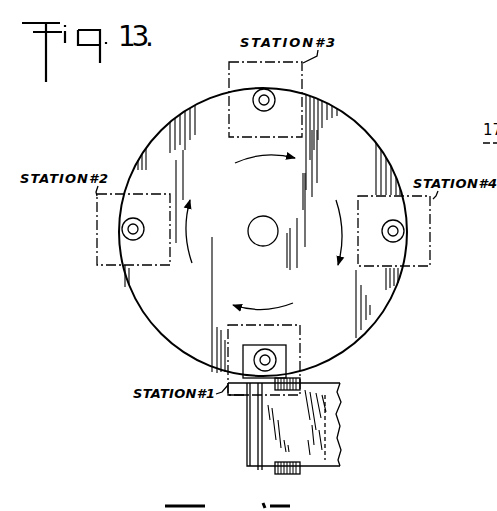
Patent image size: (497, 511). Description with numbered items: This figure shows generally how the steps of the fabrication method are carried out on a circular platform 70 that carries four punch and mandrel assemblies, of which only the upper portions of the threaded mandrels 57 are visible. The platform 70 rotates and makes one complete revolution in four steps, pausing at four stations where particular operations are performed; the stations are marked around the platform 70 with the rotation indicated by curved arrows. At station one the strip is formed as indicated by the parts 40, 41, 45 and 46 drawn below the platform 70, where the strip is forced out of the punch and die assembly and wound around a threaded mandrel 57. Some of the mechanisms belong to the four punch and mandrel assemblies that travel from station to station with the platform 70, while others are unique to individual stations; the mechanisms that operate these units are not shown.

The circular platform 70 is at (130, 293).
The threaded mandrel 57 is at (260, 110).
The strip forming element 45 is at (317, 418).
The strip forming element 40 is at (250, 466).
The strip forming element 41 is at (259, 470).
The strip forming element 46 is at (300, 385).